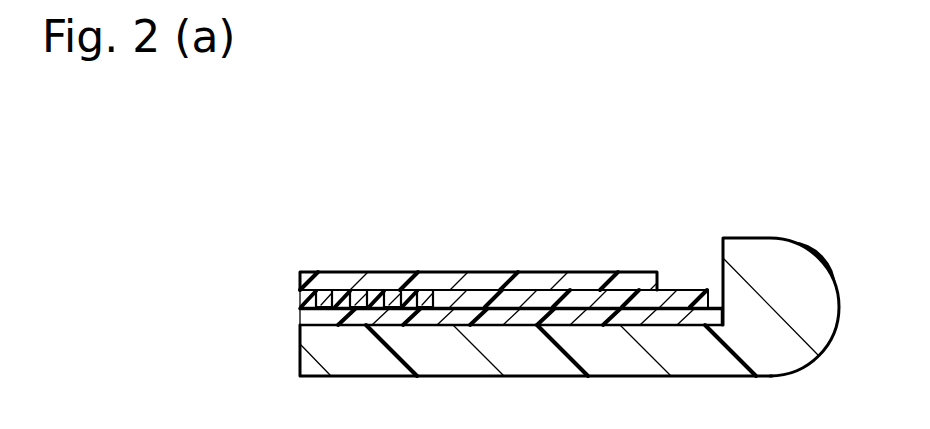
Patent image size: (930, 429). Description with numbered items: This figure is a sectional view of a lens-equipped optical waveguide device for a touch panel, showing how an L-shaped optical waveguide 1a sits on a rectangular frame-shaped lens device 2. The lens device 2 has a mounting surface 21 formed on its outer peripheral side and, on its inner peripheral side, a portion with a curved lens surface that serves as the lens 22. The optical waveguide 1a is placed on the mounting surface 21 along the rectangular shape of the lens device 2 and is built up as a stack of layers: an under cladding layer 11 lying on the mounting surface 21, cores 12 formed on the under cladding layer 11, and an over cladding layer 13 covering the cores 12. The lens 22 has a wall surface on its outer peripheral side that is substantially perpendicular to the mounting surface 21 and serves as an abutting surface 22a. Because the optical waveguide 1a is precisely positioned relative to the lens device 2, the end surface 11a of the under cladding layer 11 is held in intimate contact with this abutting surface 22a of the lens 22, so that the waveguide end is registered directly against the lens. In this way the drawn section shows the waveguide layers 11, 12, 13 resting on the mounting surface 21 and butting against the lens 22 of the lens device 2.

The lens device 2 is at (840, 256).
The optical waveguide 1a is at (189, 225).
The under cladding layer 11 is at (312, 317).
The end surface of under cladding layer 11a is at (725, 316).
The cores 12 is at (316, 298).
The over cladding layer 13 is at (342, 276).
The mounting surface 21 is at (520, 323).
The lens 22 is at (767, 248).
The abutting surface 22a is at (722, 248).